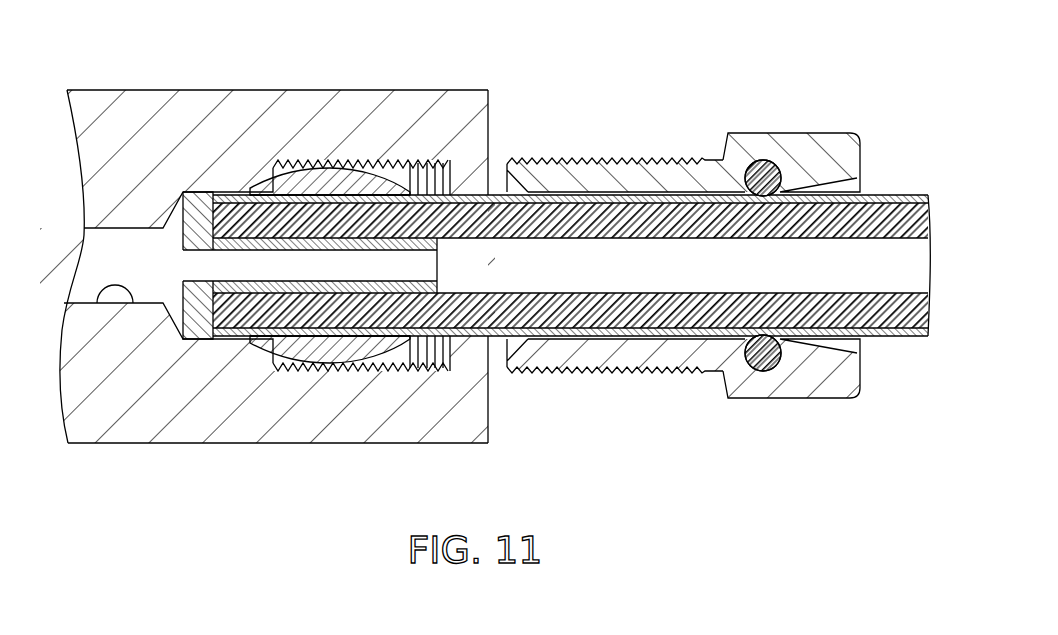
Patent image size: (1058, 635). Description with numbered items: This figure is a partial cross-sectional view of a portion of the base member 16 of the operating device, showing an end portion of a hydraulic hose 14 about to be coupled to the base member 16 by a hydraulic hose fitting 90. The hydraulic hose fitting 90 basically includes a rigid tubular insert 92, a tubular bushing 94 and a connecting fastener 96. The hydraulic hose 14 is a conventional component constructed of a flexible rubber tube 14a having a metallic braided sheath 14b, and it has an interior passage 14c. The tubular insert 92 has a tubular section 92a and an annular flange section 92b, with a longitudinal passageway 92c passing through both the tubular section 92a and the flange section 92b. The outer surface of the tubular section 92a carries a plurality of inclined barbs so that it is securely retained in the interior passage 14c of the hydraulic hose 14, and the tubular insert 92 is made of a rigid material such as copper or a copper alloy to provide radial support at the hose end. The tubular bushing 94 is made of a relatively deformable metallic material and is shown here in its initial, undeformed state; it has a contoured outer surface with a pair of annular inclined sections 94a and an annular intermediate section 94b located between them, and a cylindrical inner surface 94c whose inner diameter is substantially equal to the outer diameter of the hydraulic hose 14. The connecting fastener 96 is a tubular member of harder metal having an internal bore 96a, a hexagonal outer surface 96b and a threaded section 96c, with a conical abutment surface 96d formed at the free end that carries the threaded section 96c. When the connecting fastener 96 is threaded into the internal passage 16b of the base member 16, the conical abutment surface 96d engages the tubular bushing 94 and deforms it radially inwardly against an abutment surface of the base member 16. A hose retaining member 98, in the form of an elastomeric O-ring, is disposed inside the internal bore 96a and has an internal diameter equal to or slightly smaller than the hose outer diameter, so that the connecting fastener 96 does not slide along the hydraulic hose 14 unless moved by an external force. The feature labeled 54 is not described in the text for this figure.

The hydraulic hose 14 is at (578, 280).
The flexible rubber tube 14a is at (882, 337).
The metallic braided sheath 14b is at (911, 337).
The interior passage 14c is at (723, 290).
The base member 16 is at (267, 251).
The internal passage 16b is at (448, 168).
The passage 54 is at (98, 304).
The hydraulic hose fitting 90 is at (677, 236).
The tubular insert 92 is at (273, 279).
The tubular section 92a is at (245, 293).
The annular flange section 92b is at (195, 340).
The longitudinal passageway 92c is at (223, 252).
The tubular bushing 94 is at (372, 270).
The annular inclined sections 94a is at (290, 342).
The annular intermediate section 94b is at (340, 337).
The cylindrical inner surface 94c is at (378, 316).
The connecting fastener 96 is at (677, 259).
The internal bore 96a is at (628, 203).
The hexagonal outer surface 96b is at (826, 133).
The threaded section 96c is at (593, 160).
The conical abutment surface 96d is at (507, 176).
The hose retaining member 98 is at (755, 162).